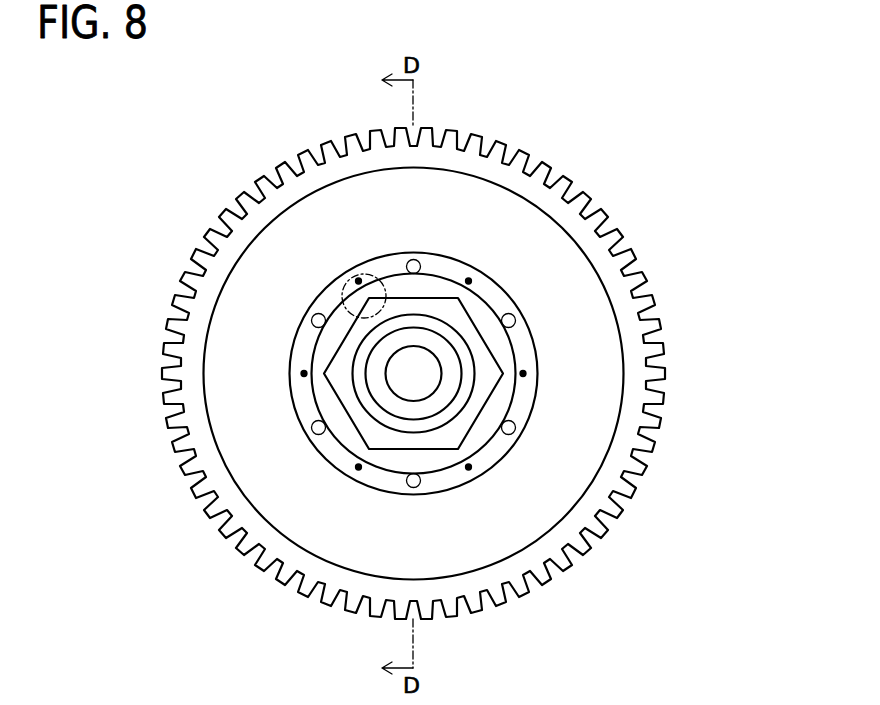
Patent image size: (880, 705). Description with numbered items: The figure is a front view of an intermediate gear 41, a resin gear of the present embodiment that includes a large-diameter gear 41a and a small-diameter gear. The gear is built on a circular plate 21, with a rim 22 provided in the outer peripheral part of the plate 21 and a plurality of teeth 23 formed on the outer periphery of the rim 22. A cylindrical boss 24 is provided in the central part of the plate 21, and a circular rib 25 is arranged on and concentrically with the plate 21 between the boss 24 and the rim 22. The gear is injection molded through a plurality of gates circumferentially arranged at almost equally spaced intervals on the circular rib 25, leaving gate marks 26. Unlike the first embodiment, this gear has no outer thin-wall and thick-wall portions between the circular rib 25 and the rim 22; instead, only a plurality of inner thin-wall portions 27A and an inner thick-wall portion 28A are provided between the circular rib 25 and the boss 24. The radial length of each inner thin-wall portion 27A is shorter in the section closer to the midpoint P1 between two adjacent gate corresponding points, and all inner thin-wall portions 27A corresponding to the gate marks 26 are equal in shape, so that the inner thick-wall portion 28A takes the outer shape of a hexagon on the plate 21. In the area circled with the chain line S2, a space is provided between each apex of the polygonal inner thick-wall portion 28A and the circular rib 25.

The intermediate gear 41 is at (443, 325).
The large-diameter gear 41a is at (443, 376).
The rim 22 is at (628, 422).
The teeth 23 is at (602, 230).
The circular plate 21 is at (417, 370).
The circular rib 25 is at (517, 347).
The gate marks 26 is at (413, 258).
The midpoint P1 is at (471, 280).
The inner thin-wall portions 27A is at (421, 291).
The inner thick-wall portion 28A is at (462, 422).
The boss 24 is at (363, 385).
The chain line S2 is at (380, 270).